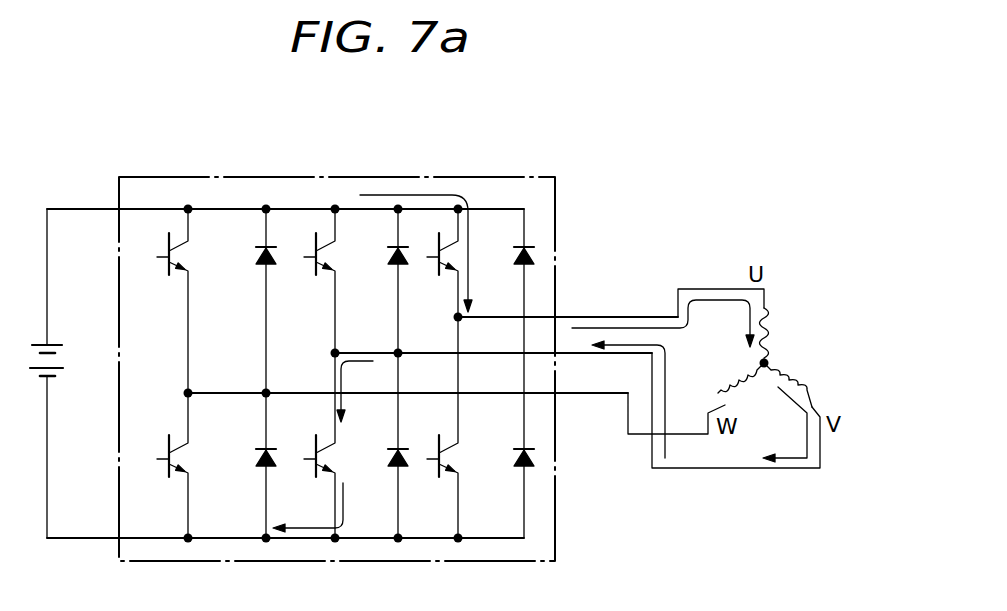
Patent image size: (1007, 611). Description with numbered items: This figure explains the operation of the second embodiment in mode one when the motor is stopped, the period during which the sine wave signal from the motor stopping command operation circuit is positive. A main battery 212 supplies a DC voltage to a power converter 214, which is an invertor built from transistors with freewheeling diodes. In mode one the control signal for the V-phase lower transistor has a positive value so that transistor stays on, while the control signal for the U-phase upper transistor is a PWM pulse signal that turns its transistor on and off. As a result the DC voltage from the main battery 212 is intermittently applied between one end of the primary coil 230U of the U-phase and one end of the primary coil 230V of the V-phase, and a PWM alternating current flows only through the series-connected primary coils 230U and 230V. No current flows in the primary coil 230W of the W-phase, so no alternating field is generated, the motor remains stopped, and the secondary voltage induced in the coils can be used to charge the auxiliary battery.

The main battery 212 is at (63, 353).
The power converter 214 is at (484, 176).
The primary coil of the U-phase 230U is at (767, 321).
The primary coil of the V-phase 230V is at (790, 384).
The primary coil of the W-phase 230W is at (728, 388).